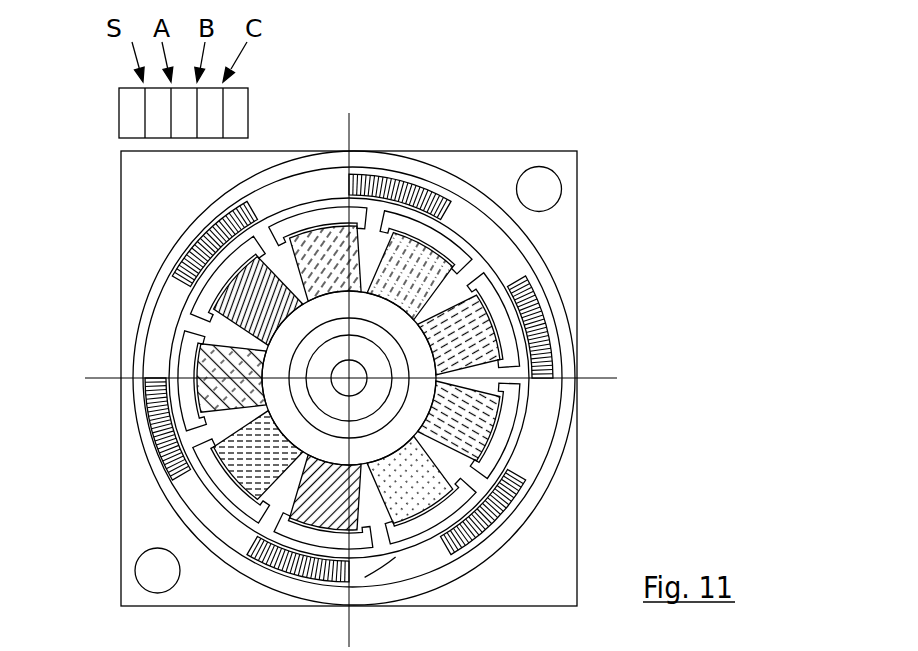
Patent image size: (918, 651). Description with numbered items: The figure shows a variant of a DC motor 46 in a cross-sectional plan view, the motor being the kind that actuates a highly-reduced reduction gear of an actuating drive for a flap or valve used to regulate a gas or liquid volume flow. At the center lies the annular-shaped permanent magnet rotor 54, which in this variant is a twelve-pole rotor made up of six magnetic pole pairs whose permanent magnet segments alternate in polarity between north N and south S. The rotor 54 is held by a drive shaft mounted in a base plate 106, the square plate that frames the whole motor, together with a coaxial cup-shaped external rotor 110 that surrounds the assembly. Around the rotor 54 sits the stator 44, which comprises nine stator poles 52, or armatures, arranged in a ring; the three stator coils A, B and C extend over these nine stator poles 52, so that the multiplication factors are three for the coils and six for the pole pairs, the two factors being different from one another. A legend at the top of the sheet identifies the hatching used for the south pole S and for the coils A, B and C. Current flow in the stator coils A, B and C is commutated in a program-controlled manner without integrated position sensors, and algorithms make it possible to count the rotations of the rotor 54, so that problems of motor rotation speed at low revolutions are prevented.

The stator 44 is at (357, 308).
The DC motor 46 is at (732, 368).
The stator poles 52 is at (183, 398).
The permanent magnet rotor 54 is at (505, 249).
The base plate 106 is at (162, 199).
The cup-shaped external rotor 110 is at (308, 175).
The stator coil A is at (467, 332).
The stator coil B is at (407, 272).
The stator coil C is at (463, 420).
The north pole N is at (480, 520).
The south pole S is at (400, 563).